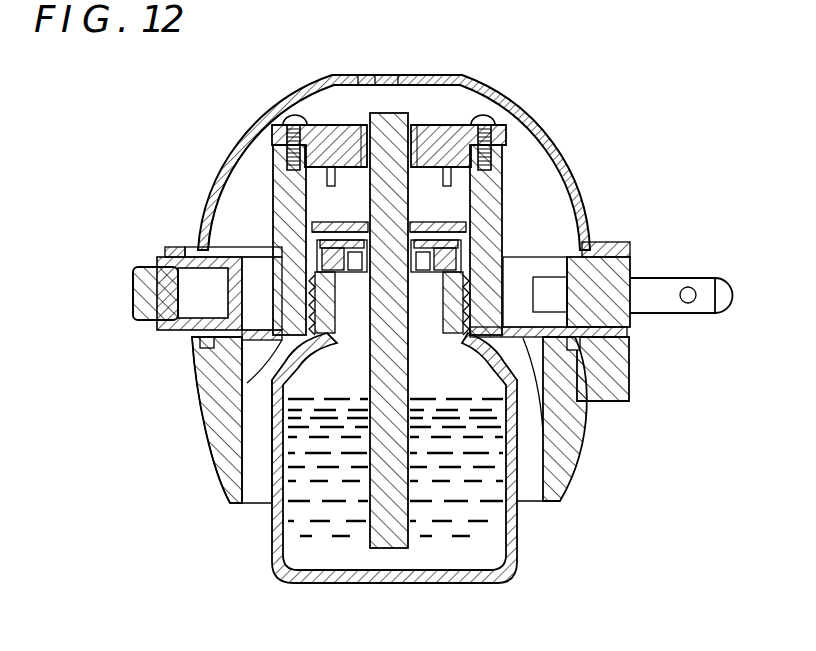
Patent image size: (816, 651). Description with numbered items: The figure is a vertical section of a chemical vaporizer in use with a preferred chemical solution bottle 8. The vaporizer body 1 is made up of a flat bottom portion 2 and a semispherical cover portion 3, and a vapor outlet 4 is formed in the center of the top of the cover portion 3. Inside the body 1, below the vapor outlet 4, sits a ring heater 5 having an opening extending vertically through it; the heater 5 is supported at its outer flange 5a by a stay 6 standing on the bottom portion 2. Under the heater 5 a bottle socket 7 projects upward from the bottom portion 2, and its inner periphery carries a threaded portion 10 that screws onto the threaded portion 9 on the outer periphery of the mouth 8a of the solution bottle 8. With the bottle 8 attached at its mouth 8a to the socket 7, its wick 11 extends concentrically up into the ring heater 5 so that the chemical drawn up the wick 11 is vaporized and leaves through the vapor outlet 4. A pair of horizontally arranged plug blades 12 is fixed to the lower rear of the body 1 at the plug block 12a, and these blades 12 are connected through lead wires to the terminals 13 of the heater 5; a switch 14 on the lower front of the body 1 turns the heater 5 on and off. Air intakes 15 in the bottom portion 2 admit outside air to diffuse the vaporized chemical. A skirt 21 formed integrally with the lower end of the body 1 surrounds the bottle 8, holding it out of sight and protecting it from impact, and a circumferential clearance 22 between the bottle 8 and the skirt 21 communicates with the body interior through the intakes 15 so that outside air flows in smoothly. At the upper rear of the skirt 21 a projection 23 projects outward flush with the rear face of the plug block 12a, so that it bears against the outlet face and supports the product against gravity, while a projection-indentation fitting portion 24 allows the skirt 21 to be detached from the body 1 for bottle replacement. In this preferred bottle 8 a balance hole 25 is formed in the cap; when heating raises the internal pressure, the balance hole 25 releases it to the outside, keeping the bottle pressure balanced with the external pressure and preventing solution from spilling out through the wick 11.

The vaporizer body 1 is at (516, 113).
The bottom portion 2 is at (240, 388).
The cover portion 3 is at (237, 138).
The vapor outlet 4 is at (409, 82).
The ring heater 5 is at (328, 120).
The outer flange 5a is at (283, 118).
The stay 6 is at (504, 190).
The bottle socket 7 is at (503, 250).
The chemical solution bottle 8 is at (272, 523).
The mouth 8a is at (349, 334).
The threaded portion 9 is at (457, 285).
The threaded portion 10 is at (443, 337).
The wick 11 is at (418, 520).
The plug blades 12 is at (708, 282).
The plug block 12a is at (636, 263).
The terminals 13 is at (330, 178).
The switch 14 is at (142, 286).
The air intakes 15 is at (235, 388).
The skirt 21 is at (253, 447).
The circumferential clearance 22 is at (218, 460).
The projection 23 is at (614, 372).
The projection-indentation fitting portion 24 is at (589, 420).
The balance hole 25 is at (350, 280).